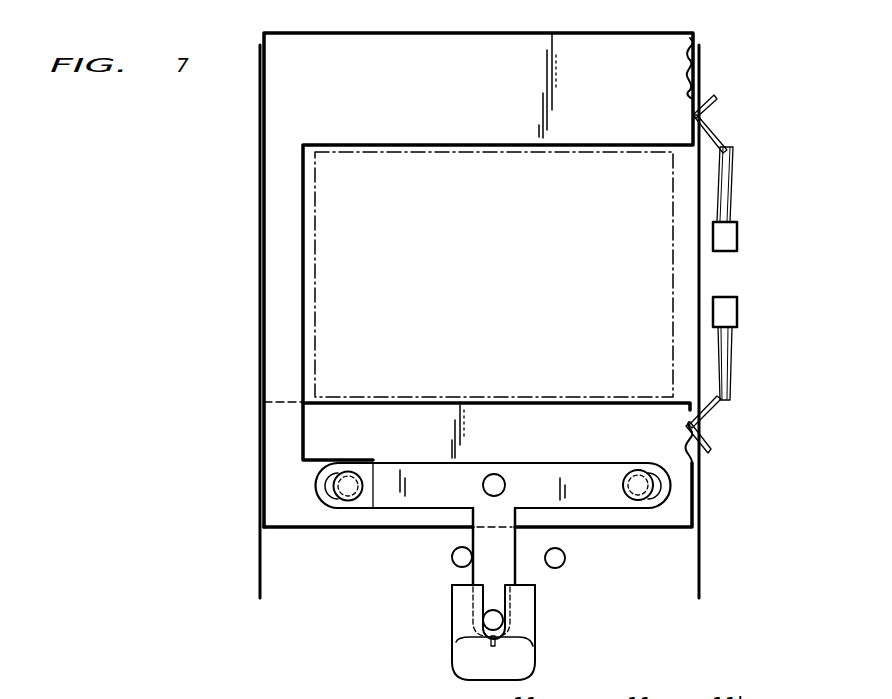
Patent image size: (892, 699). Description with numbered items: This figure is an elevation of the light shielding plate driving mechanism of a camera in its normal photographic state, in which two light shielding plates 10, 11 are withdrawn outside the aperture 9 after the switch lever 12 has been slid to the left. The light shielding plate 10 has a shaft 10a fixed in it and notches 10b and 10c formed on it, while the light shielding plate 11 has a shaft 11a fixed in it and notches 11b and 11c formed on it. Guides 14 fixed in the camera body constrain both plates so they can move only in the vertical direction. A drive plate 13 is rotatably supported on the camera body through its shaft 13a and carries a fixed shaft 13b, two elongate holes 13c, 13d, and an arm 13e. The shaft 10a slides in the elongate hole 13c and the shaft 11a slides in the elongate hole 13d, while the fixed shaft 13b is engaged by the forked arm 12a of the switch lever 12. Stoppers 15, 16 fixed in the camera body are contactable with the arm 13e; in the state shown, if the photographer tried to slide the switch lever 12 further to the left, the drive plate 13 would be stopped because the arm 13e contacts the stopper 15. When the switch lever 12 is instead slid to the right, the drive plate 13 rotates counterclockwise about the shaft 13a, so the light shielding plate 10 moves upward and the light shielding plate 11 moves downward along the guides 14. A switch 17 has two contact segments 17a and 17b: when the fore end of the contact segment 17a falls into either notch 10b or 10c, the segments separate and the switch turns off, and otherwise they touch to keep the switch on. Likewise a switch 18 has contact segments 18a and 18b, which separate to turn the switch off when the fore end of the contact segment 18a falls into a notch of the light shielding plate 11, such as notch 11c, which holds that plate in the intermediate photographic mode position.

The aperture 9 is at (420, 148).
The light shielding plate 10 is at (703, 518).
The shaft 10a is at (635, 500).
The notch 10b is at (709, 452).
The notch 10c is at (701, 468).
The light shielding plate 11 is at (515, 40).
The shaft 11a is at (347, 497).
The notch 11b is at (697, 36).
The notch 11c is at (687, 84).
The switch lever 12 is at (523, 670).
The forked arm 12a is at (483, 603).
The drive plate 13 is at (590, 498).
The shaft 13a is at (497, 470).
The fixed shaft 13b is at (503, 620).
The elongate hole 13c is at (662, 502).
The elongate hole 13d is at (328, 495).
The arm 13e is at (510, 568).
The guides 14 is at (258, 212).
The stopper 15 is at (452, 557).
The stopper 16 is at (563, 565).
The switch 17 is at (731, 317).
The contact segment 17a is at (708, 408).
The contact segment 17b is at (733, 372).
The switch 18 is at (731, 238).
The contact segment 18a is at (716, 137).
The contact segment 18b is at (734, 200).